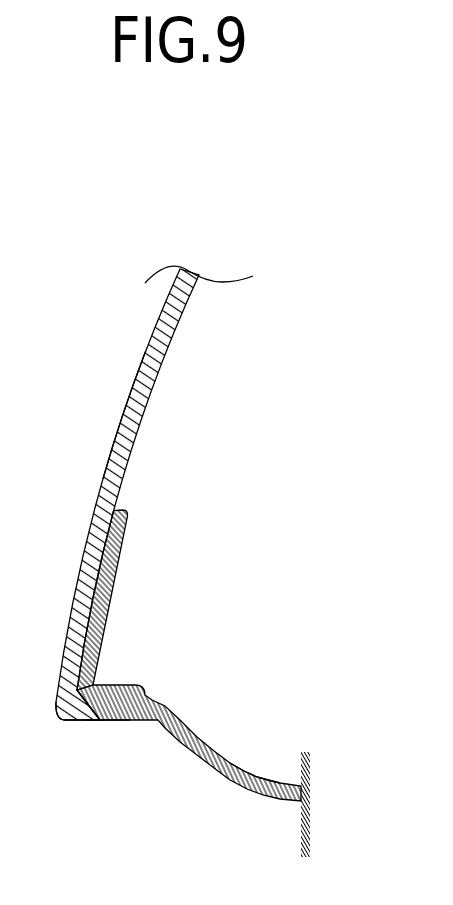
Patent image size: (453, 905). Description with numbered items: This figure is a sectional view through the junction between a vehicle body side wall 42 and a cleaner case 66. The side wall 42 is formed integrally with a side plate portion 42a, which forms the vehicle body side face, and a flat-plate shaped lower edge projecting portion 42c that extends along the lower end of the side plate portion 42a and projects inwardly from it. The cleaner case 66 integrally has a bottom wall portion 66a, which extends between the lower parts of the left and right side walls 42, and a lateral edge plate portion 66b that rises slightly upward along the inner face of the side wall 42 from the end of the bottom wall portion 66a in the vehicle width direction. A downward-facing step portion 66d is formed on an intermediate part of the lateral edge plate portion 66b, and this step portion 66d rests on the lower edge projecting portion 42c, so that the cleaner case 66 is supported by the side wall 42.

The side wall 42 is at (146, 349).
The side plate portion 42a is at (121, 426).
The lower edge projecting portion 42c is at (118, 722).
The cleaner case 66 is at (268, 809).
The bottom wall portion 66a is at (253, 768).
The lateral edge plate portion 66b is at (115, 568).
The step portion 66d is at (102, 722).